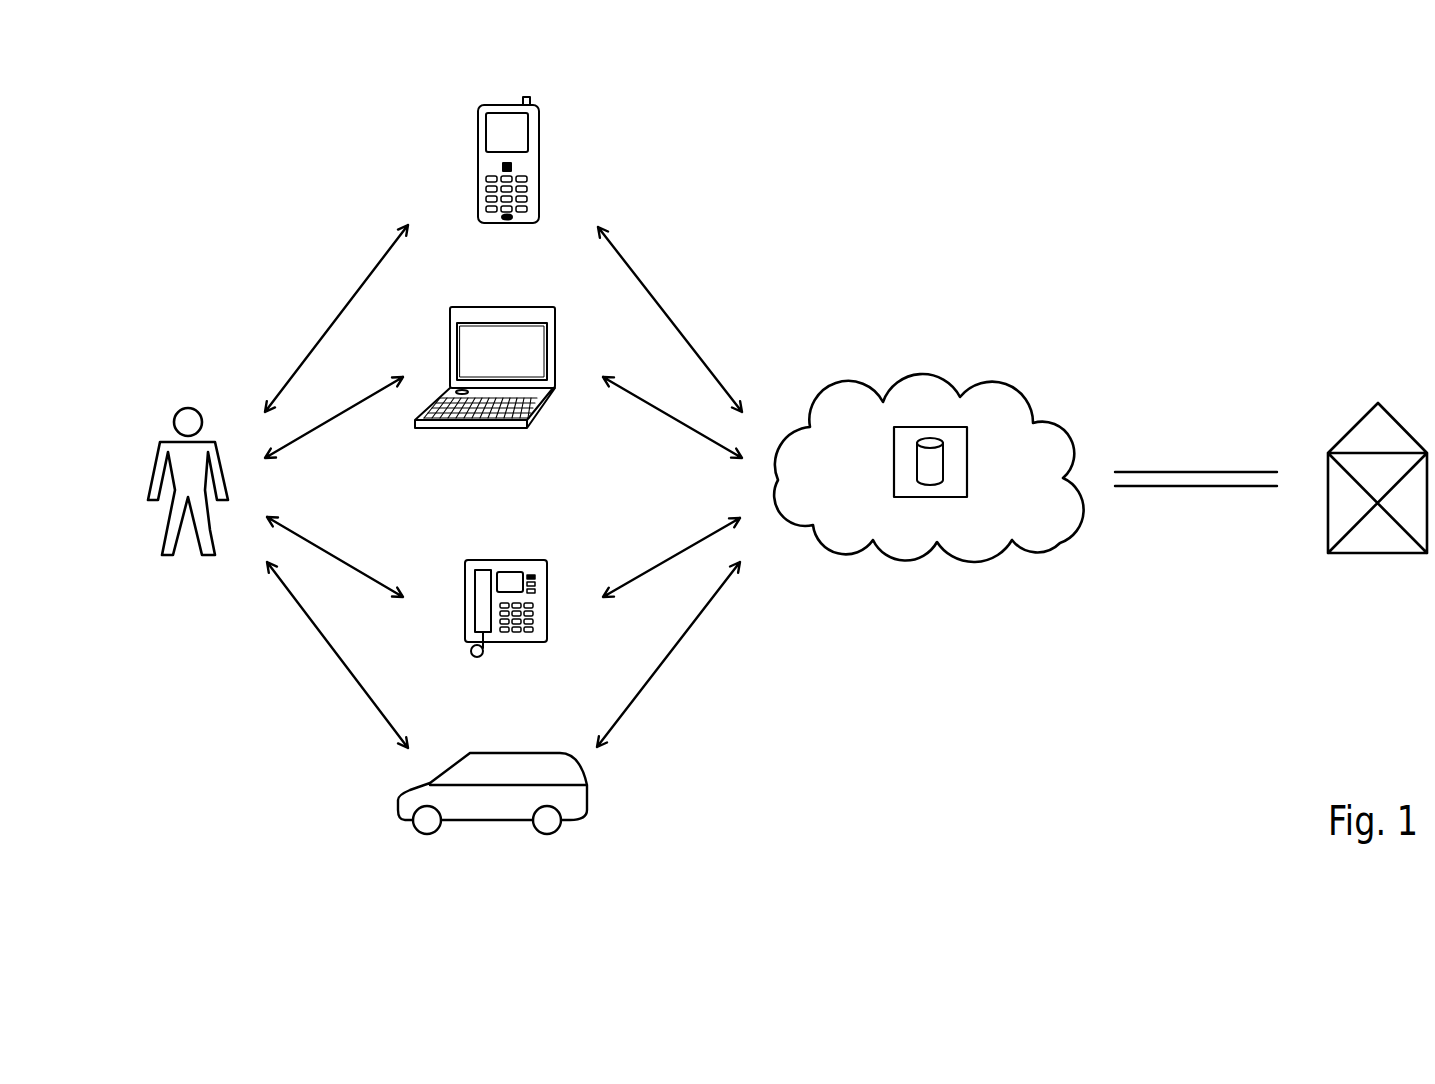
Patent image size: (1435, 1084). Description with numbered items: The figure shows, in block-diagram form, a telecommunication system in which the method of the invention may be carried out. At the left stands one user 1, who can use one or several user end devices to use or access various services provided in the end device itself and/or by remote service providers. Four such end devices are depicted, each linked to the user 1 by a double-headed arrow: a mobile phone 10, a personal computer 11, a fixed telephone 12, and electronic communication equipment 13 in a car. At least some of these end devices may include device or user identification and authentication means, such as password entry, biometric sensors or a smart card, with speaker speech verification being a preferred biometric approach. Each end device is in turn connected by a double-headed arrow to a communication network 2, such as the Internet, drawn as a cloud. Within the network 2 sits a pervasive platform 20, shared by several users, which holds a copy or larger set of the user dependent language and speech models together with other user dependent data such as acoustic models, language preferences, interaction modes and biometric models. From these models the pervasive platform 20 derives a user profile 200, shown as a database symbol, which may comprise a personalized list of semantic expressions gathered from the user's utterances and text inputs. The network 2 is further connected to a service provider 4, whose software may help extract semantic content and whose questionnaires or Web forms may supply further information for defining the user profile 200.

The user 1 is at (157, 549).
The mobile phone 10 is at (490, 188).
The personal computer 11 is at (480, 415).
The telephone 12 is at (475, 658).
The electronic communication equipment in a car 13 is at (460, 818).
The communication network 2 is at (845, 560).
The pervasive platform 20 is at (894, 442).
The user profile 200 is at (932, 477).
The service provider 4 is at (1352, 555).